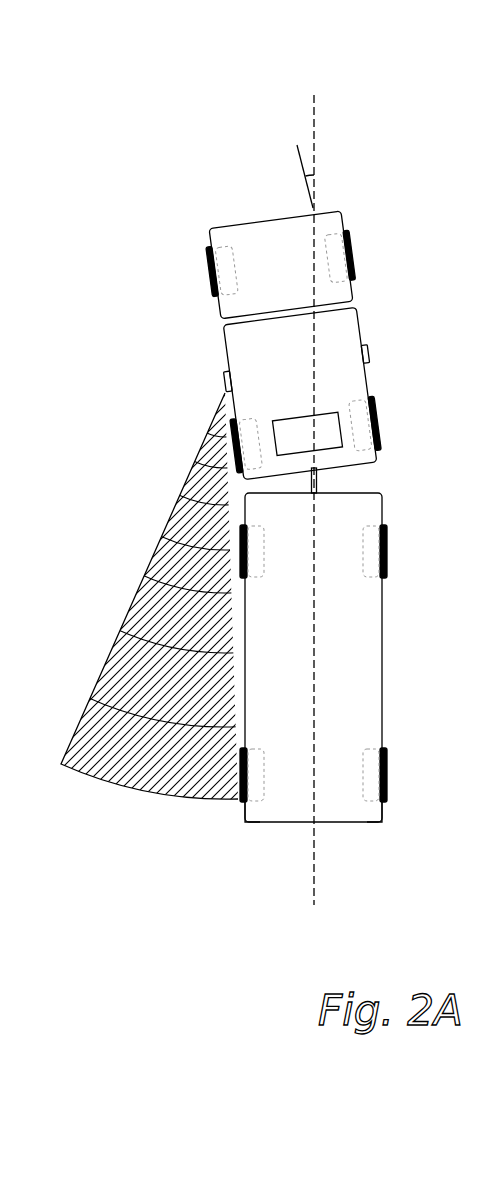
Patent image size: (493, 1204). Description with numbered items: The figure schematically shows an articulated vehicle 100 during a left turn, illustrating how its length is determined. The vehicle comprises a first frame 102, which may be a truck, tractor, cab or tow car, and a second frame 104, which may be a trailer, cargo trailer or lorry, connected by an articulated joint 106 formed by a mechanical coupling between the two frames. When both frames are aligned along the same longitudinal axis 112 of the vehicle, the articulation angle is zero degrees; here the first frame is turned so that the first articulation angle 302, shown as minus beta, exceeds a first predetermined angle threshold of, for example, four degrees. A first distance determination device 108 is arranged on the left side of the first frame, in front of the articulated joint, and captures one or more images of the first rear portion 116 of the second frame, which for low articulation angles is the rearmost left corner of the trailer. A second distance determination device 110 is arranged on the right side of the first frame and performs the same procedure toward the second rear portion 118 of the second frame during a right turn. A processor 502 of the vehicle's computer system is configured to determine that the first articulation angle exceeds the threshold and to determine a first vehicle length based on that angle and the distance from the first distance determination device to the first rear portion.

The articulated vehicle 100 is at (193, 62).
The first frame 102 is at (262, 218).
The second frame 104 is at (382, 660).
The articulated joint 106 is at (318, 486).
The first distance determination device 108 is at (224, 372).
The second distance determination device 110 is at (370, 357).
The longitudinal axis 112 is at (314, 898).
The first rear portion 116 is at (247, 823).
The second rear portion 118 is at (382, 823).
The first articulation angle 302 is at (294, 271).
The processor 502 is at (343, 432).